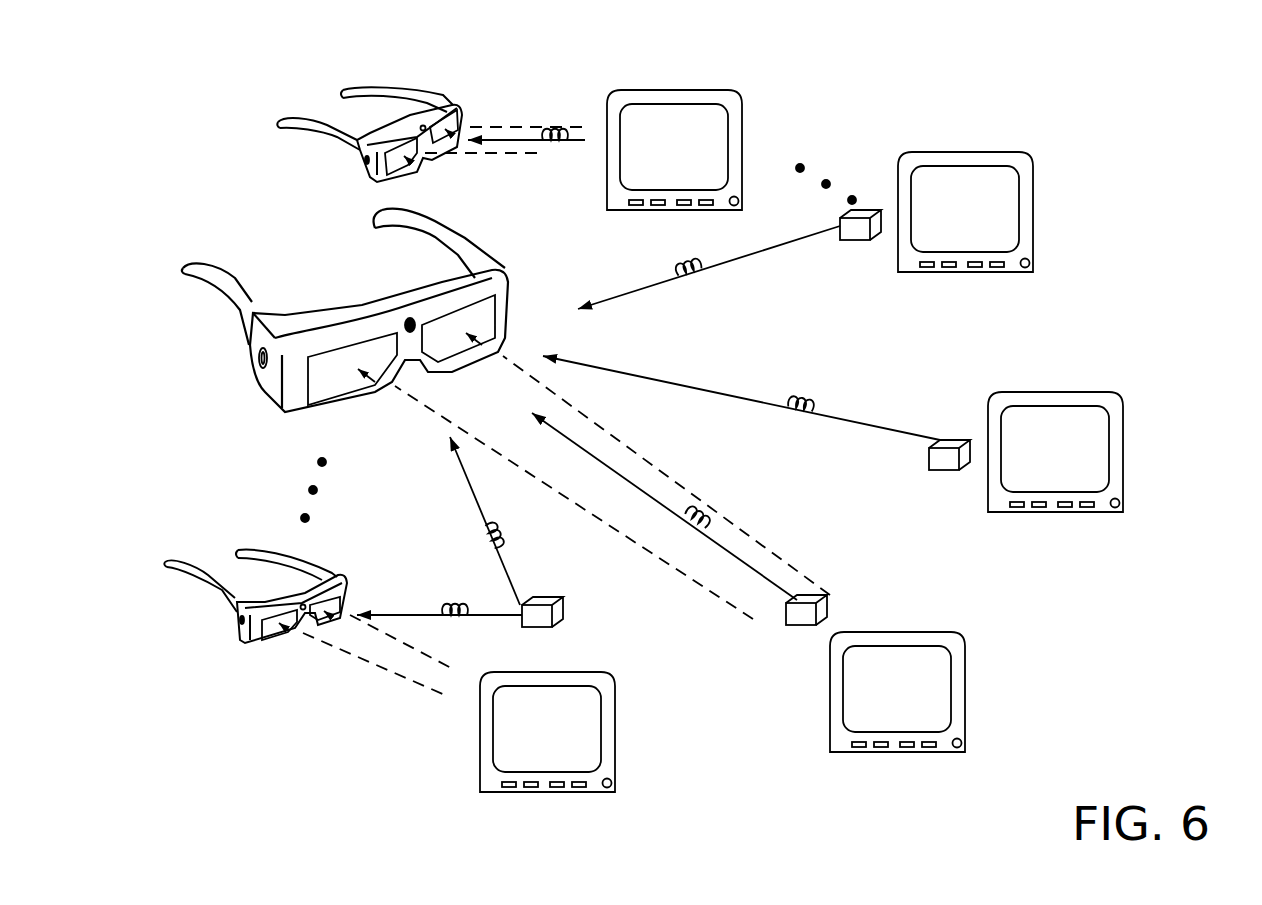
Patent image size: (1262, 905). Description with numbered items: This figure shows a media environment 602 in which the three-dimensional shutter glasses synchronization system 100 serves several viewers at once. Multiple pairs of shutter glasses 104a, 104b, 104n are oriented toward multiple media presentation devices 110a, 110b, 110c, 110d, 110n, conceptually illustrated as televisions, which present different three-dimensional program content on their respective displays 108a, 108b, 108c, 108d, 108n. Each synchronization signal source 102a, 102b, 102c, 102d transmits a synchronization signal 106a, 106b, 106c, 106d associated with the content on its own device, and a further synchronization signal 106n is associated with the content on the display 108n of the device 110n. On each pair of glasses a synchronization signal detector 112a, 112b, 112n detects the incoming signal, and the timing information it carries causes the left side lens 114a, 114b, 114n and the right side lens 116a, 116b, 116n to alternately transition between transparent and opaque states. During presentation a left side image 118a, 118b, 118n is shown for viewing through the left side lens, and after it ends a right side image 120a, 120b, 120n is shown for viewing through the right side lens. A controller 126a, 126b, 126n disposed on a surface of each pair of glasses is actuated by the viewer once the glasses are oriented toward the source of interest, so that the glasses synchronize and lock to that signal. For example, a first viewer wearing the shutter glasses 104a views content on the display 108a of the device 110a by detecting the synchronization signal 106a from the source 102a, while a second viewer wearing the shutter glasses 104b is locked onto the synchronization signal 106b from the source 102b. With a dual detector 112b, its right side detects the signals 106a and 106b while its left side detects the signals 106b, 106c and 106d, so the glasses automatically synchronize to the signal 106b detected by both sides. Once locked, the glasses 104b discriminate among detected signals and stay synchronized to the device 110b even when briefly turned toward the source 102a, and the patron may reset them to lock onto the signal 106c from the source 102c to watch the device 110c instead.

The 3-D shutter glasses synchronization system 100 is at (1140, 713).
The media environment 602 is at (786, 799).
The synchronization signal source 102a is at (553, 626).
The synchronization signal source 102b is at (795, 626).
The synchronization signal source 102c is at (940, 472).
The synchronization signal source 102d is at (843, 243).
The shutter glasses 104a is at (327, 572).
The shutter glasses 104b is at (265, 388).
The shutter glasses 104n is at (278, 122).
The synchronization signal 106a is at (486, 537).
The synchronization signal 106b is at (690, 522).
The synchronization signal 106c is at (805, 400).
The synchronization signal 106d is at (692, 280).
The synchronization signal 106n is at (562, 148).
The display 108a is at (547, 729).
The display 108b is at (897, 689).
The display 108c is at (1055, 449).
The display 108d is at (965, 209).
The display 108n is at (674, 147).
The media presentation device 110a is at (615, 730).
The media presentation device 110b is at (965, 676).
The media presentation device 110c is at (1123, 450).
The media presentation device 110d is at (1033, 218).
The media presentation device 110n is at (788, 112).
The synchronization signal detector 112a is at (288, 588).
The synchronization signal detector 112b is at (405, 318).
The synchronization signal detector 112n is at (410, 122).
The left side lens 114a is at (337, 605).
The left side lens 114b is at (452, 340).
The left side lens 114n is at (448, 126).
The right side lens 116a is at (267, 635).
The right side lens 116b is at (335, 368).
The right side lens 116n is at (403, 155).
The left side image 118a is at (383, 666).
The left side image 118b is at (720, 597).
The left side image 118n is at (513, 153).
The right side image 120a is at (425, 658).
The right side image 120b is at (593, 424).
The right side image 120n is at (530, 127).
The controller 126a is at (240, 620).
The controller 126b is at (257, 358).
The controller 126n is at (365, 161).